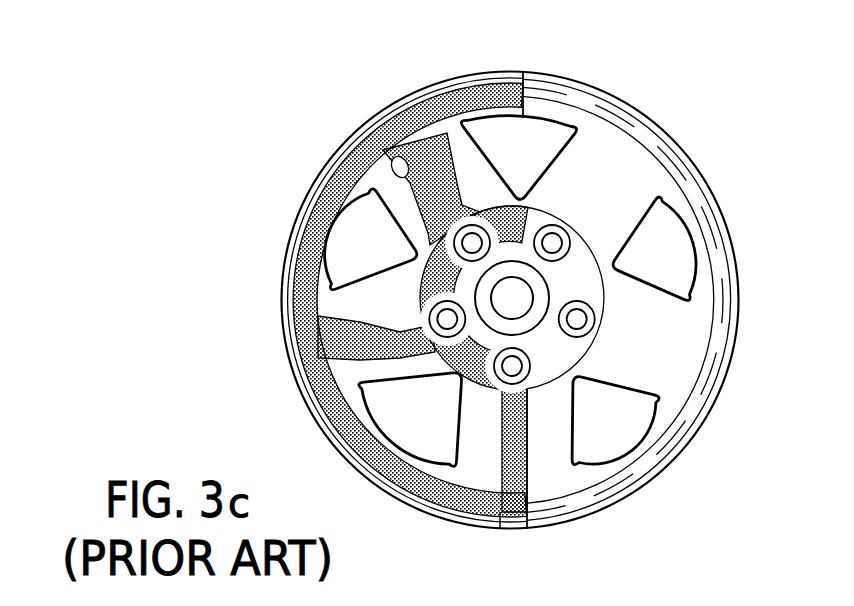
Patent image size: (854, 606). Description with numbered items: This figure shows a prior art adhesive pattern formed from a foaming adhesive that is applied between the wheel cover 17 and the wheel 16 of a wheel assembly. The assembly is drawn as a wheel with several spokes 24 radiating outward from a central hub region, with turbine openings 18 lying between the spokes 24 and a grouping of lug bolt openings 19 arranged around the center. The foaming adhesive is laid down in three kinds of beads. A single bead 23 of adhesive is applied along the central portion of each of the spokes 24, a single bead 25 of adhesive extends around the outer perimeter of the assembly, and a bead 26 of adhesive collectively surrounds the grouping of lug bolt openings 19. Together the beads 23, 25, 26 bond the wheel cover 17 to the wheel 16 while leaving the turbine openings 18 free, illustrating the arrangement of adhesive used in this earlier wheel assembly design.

The wheel 16 is at (473, 72).
The wheel cover 17 is at (550, 465).
The turbine openings 18 is at (502, 160).
The lug bolt openings 19 is at (503, 285).
The bead of adhesive along spokes 23 is at (402, 170).
The spokes 24 is at (443, 148).
The outer perimeter bead of adhesive 25 is at (298, 273).
The bead of adhesive surrounding lug bolt openings 26 is at (452, 223).